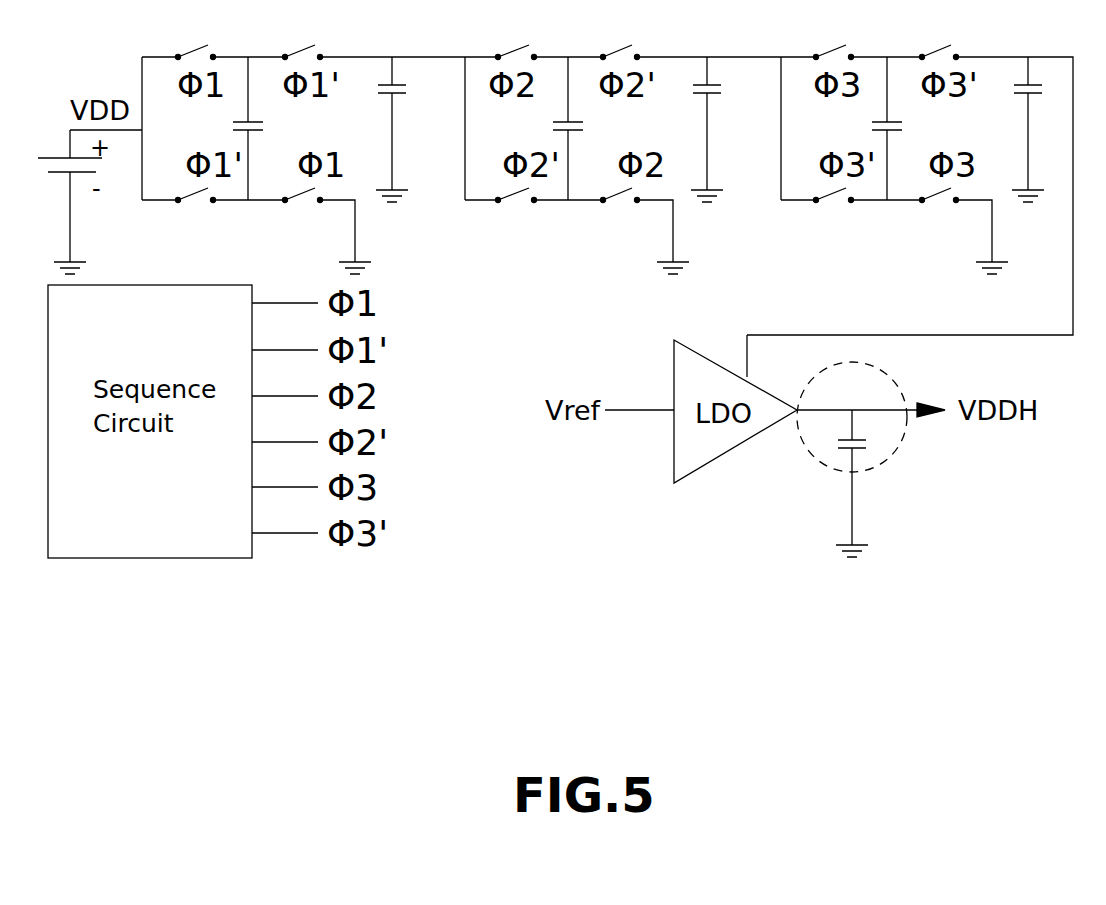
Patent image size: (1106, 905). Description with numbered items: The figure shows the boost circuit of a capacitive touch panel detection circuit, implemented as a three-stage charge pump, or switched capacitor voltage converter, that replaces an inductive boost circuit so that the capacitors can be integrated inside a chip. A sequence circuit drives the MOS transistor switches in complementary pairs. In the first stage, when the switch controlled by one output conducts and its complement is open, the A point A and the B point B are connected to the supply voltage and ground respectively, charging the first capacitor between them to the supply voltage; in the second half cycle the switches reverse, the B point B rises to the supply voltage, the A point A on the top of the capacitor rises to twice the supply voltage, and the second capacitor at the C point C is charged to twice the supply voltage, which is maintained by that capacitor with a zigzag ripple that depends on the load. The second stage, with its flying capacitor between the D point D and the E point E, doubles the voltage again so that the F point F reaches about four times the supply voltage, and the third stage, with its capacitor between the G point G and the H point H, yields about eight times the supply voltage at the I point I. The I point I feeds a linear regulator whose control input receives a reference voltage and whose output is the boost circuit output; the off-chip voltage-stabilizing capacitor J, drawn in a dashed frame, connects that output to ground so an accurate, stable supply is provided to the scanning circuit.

The A point A is at (248, 76).
The B point B is at (248, 185).
The C point C is at (392, 112).
The D point D is at (568, 76).
The E point E is at (567, 185).
The F point F is at (707, 112).
The G point G is at (887, 76).
The H point H is at (887, 185).
The I point I is at (1028, 112).
The voltage-stabilizing capacitor J is at (852, 459).